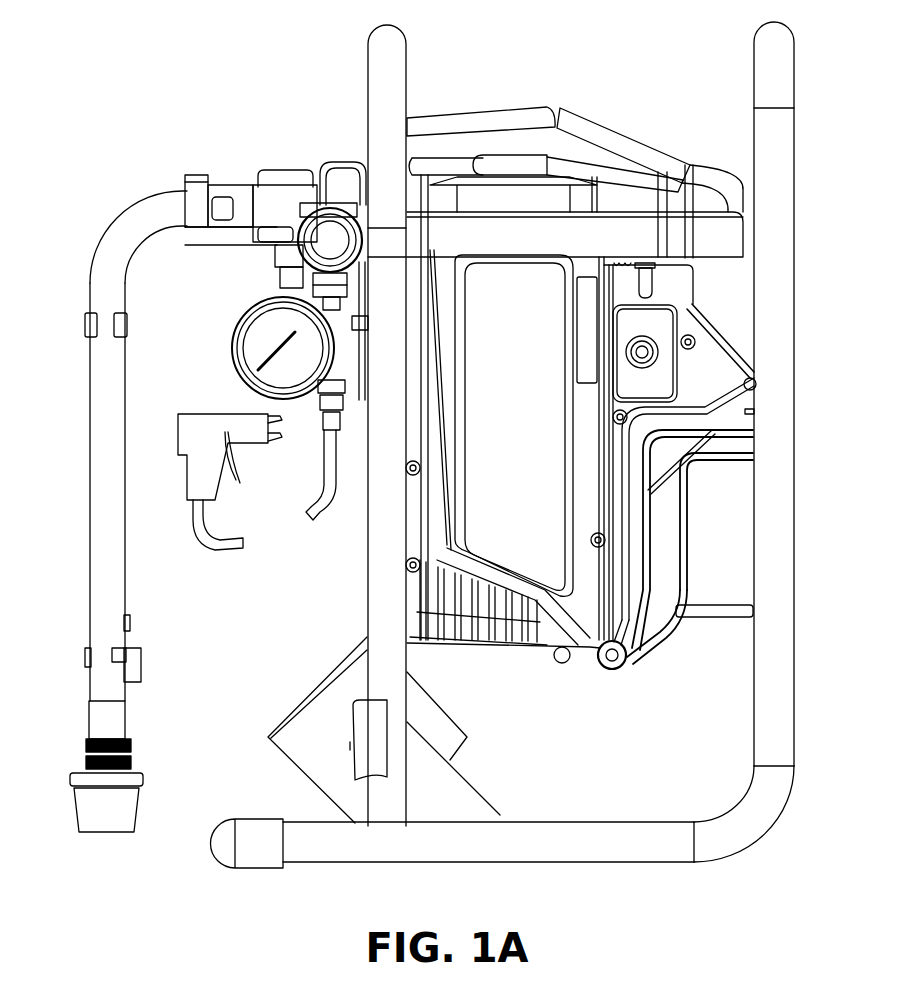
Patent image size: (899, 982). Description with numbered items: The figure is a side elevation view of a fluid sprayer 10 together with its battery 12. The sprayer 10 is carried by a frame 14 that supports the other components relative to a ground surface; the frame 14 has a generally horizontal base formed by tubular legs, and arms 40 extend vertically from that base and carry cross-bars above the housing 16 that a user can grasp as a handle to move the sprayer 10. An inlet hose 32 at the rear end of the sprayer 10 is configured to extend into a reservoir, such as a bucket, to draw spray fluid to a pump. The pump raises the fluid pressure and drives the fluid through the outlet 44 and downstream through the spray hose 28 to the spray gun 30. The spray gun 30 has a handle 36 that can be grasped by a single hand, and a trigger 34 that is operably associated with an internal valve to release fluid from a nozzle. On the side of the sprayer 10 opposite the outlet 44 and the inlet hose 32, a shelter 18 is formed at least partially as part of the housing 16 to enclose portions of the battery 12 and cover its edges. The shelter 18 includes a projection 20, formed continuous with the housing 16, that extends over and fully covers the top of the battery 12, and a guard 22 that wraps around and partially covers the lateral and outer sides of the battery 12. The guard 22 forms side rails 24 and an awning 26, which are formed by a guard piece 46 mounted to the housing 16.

The fluid sprayer 10 is at (288, 118).
The battery 12 is at (702, 647).
The frame 14 is at (802, 724).
The housing 16 is at (661, 287).
The shelter 18 is at (670, 645).
The projection 20 is at (743, 352).
The guard 22 is at (745, 453).
The side rails 24 is at (653, 600).
The awning 26 is at (745, 435).
The spray hose 28 is at (330, 487).
The spray gun 30 is at (220, 400).
The inlet hose 32 is at (91, 407).
The trigger 34 is at (228, 462).
The handle 36 is at (190, 480).
The arms 40 is at (382, 627).
The outlet 44 is at (318, 412).
The guard piece 46 is at (635, 668).